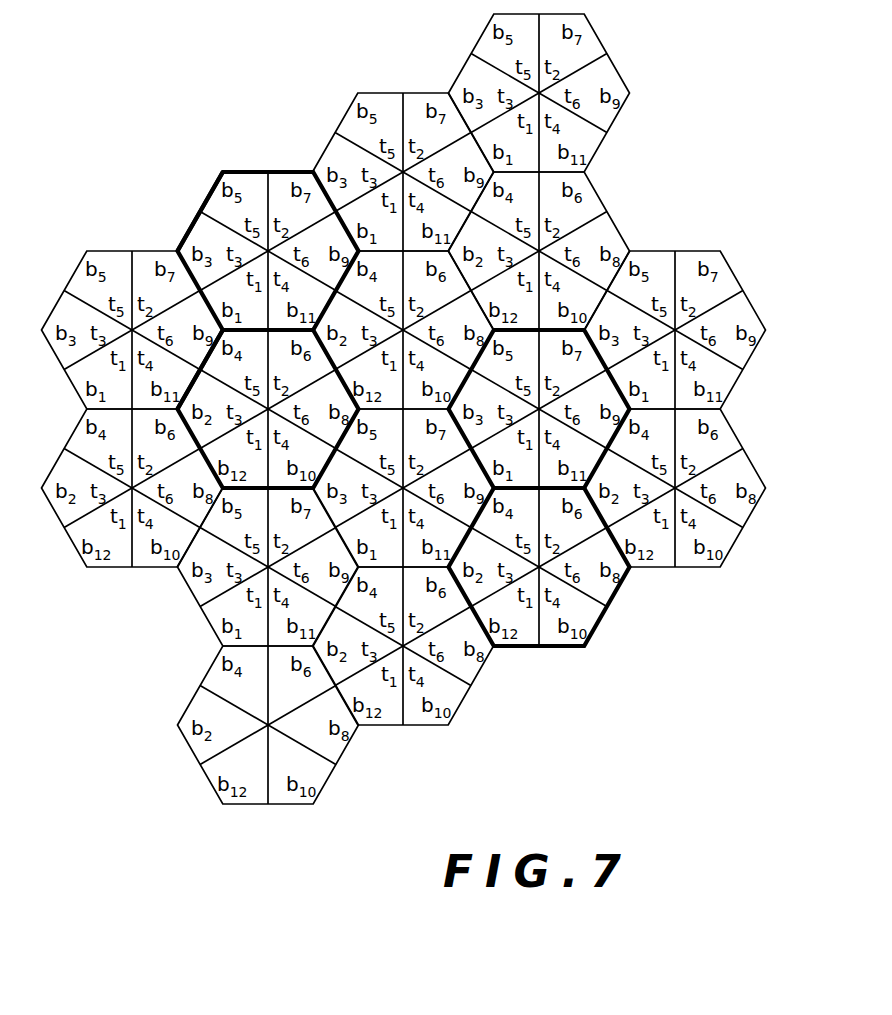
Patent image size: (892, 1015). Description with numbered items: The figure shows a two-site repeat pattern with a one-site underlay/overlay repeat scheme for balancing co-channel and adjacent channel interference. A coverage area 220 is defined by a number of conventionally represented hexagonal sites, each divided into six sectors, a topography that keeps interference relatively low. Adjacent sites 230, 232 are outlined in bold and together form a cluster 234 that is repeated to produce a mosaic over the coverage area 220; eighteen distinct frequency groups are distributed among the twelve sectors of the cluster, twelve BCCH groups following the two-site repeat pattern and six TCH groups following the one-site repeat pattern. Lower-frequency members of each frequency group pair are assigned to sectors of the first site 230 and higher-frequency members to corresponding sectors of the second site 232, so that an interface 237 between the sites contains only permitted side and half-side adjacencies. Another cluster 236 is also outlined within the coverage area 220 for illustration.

The coverage area 220 is at (157, 108).
The site 230 is at (249, 172).
The cluster 234 is at (198, 215).
The interface 237 is at (198, 372).
The site 232 is at (257, 490).
The cluster 236 is at (565, 647).